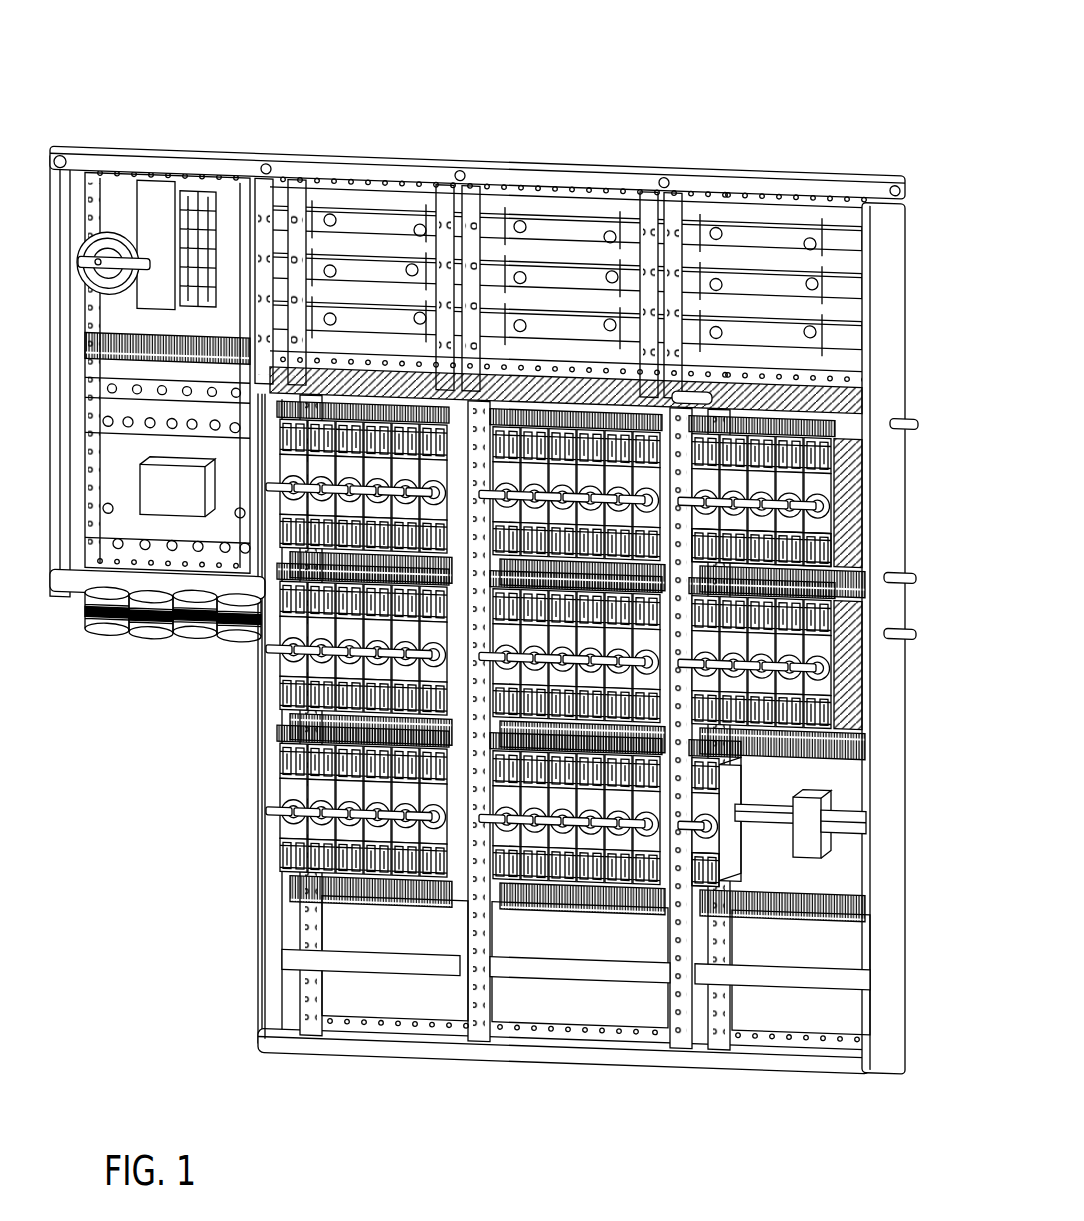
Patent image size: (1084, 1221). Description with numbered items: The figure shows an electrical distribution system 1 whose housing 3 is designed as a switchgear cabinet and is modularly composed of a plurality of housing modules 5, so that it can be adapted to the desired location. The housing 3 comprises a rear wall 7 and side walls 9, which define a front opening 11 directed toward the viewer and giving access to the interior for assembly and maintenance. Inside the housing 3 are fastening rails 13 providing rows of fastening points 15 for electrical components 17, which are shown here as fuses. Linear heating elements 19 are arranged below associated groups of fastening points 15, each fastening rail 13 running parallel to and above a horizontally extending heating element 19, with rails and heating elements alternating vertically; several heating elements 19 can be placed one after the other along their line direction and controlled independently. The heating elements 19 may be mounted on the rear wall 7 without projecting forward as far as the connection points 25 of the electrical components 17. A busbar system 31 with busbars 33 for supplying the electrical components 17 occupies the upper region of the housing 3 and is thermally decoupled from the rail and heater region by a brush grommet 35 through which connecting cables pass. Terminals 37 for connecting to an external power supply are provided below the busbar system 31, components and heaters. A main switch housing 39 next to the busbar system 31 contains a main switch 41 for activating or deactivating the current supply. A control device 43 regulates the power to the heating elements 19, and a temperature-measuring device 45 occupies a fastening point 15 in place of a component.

The electrical distribution system 1 is at (754, 104).
The housing 3 is at (205, 877).
The housing modules 5 is at (410, 156).
The rear wall 7 is at (857, 768).
The side walls 9 is at (560, 182).
The front opening 11 is at (407, 988).
The fastening rails 13 is at (847, 815).
The fastening points 15 is at (743, 800).
The electrical components 17 is at (848, 498).
The heating elements 19 is at (836, 578).
The connection points 25 is at (840, 542).
The busbar system 31 is at (606, 212).
The busbars 33 is at (498, 247).
The brush grommet 35 is at (833, 392).
The terminals 37 is at (340, 962).
The main switch housing 39 is at (166, 150).
The main switch 41 is at (117, 250).
The control device 43 is at (140, 492).
The temperature-measuring device 45 is at (818, 838).